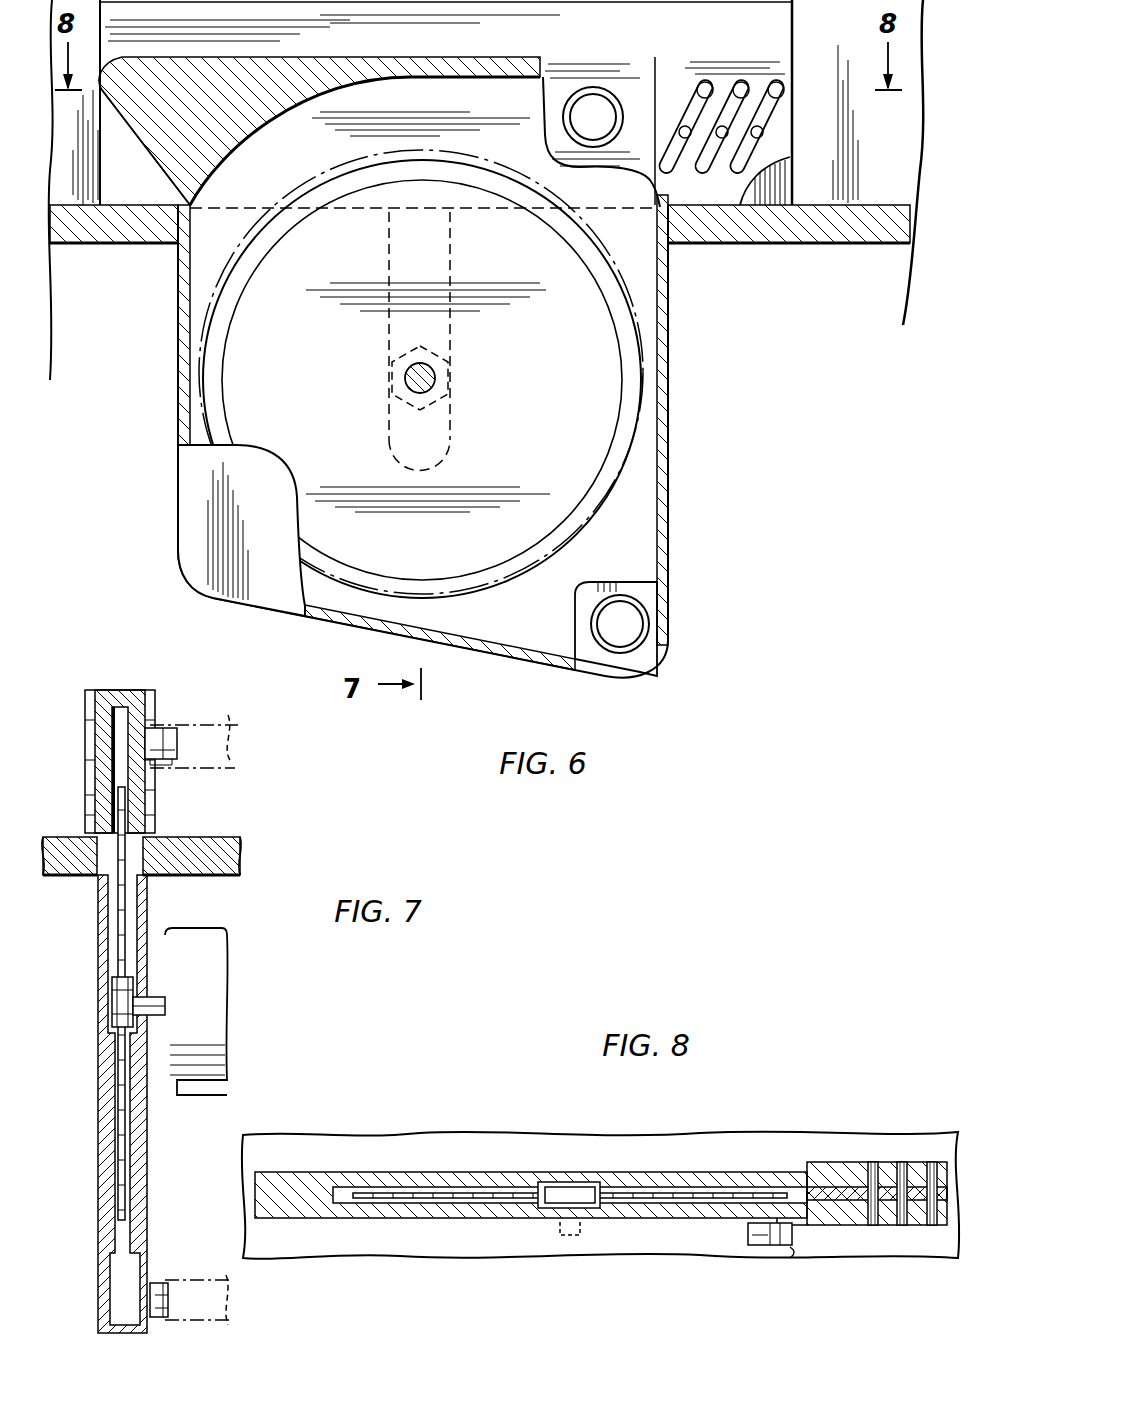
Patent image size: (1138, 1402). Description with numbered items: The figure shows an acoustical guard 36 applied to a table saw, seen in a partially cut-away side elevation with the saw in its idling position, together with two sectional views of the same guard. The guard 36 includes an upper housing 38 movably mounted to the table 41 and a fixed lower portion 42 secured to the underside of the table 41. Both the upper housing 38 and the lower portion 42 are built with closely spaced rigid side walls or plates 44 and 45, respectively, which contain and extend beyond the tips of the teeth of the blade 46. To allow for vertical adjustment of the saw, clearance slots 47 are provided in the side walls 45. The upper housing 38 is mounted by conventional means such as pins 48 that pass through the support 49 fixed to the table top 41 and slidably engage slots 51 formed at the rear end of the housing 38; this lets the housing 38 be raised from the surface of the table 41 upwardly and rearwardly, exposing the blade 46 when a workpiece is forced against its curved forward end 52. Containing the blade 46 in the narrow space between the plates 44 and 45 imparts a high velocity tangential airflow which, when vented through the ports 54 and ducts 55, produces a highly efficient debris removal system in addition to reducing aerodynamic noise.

In FIG. 6, the acoustical guard 36 is at (700, 366).
In FIG. 6, the upper housing 38 is at (495, 55).
In FIG. 7, the upper housing 38 is at (117, 690).
In FIG. 8, the upper housing 38 is at (508, 1172).
In FIG. 6, the table 41 is at (815, 240).
In FIG. 7, the table 41 is at (243, 858).
In FIG. 8, the table 41 is at (720, 1158).
In FIG. 6, the fixed lower portion 42 is at (668, 447).
In FIG. 7, the fixed lower portion 42 is at (100, 1170).
In FIG. 6, the side walls 44 is at (572, 72).
In FIG. 7, the side walls 44 is at (97, 707).
In FIG. 8, the side walls 44 is at (610, 1183).
In FIG. 6, the side walls 45 is at (192, 515).
In FIG. 7, the side walls 45 is at (100, 935).
In FIG. 6, the blade 46 is at (615, 478).
In FIG. 7, the blade 46 is at (128, 905).
In FIG. 8, the blade 46 is at (407, 1190).
In FIG. 6, the clearance slots 47 is at (446, 414).
In FIG. 7, the clearance slots 47 is at (110, 968).
In FIG. 6, the pins 48 is at (776, 82).
In FIG. 7, the pins 48 is at (85, 772).
In FIG. 8, the pins 48 is at (898, 1285).
In FIG. 6, the boss 49 is at (780, 200).
In FIG. 8, the boss 49 is at (825, 1192).
In FIG. 6, the slots 51 is at (727, 120).
In FIG. 7, the slots 51 is at (88, 800).
In FIG. 8, the slots 51 is at (945, 1130).
In FIG. 6, the curved forward end 52 is at (146, 155).
In FIG. 6, the ports 54 is at (612, 95).
In FIG. 7, the ports 54 is at (164, 735).
In FIG. 8, the ports 54 is at (765, 1247).
In FIG. 7, the ducts 55 is at (236, 1305).
In FIG. 8, the ducts 55 is at (792, 1258).